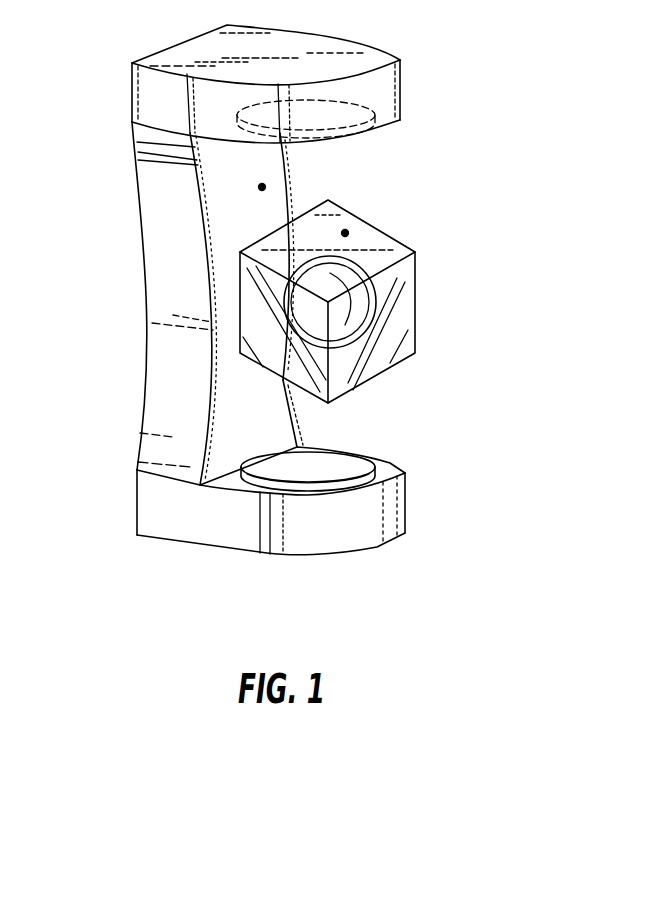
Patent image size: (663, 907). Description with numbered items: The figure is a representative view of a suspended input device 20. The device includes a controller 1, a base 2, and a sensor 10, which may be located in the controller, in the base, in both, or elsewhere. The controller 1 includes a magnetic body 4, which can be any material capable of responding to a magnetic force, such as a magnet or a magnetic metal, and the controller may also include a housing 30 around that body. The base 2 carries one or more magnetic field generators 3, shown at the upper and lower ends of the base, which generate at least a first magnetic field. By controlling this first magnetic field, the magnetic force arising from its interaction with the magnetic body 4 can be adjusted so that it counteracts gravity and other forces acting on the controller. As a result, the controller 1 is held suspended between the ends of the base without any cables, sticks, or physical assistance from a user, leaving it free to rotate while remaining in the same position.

The controller 1 is at (426, 311).
The base 2 is at (72, 63).
The magnetic field generator 3 is at (373, 110).
The magnetic body 4 is at (356, 300).
The sensor 10 is at (262, 187).
The suspended input device 20 is at (111, 608).
The housing 30 is at (416, 263).